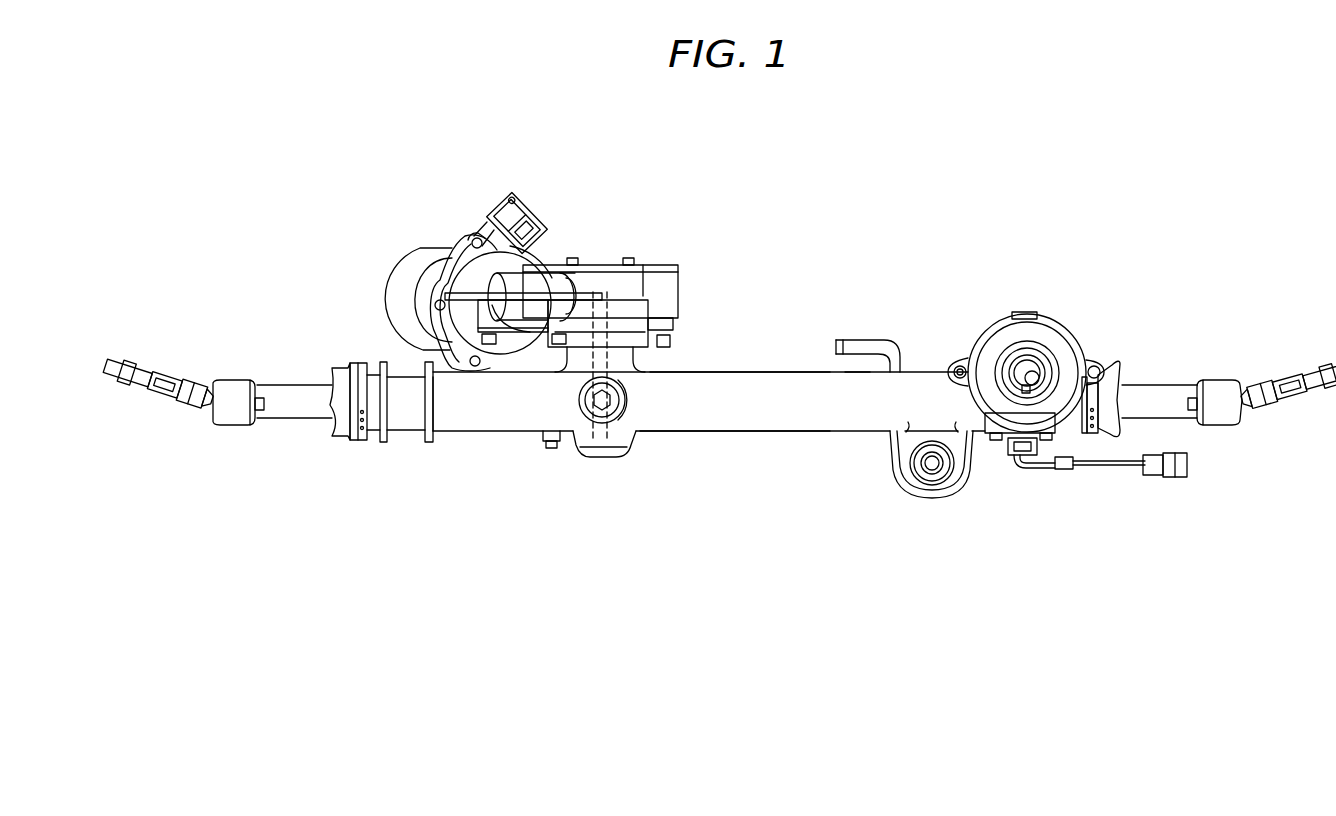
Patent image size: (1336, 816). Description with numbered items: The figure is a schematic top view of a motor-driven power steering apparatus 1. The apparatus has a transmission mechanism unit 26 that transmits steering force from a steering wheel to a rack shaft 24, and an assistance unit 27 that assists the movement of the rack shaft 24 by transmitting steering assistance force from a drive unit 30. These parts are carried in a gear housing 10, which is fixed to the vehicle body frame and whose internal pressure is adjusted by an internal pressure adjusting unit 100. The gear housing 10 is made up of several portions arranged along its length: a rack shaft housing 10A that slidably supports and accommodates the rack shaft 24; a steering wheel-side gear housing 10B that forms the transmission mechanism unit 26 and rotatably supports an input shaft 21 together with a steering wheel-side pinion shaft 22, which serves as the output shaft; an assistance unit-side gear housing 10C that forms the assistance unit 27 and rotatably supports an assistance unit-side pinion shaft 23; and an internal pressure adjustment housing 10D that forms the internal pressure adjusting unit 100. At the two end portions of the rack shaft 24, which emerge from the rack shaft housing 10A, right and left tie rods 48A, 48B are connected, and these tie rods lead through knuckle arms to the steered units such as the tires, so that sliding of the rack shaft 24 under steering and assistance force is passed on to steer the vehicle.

The motor-driven power steering apparatus 1 is at (345, 167).
The gear housing 10 is at (743, 361).
The rack shaft housing 10A is at (733, 432).
The steering wheel-side gear housing 10B is at (1043, 333).
The assistance unit-side gear housing 10C is at (660, 278).
The internal pressure adjustment housing 10D is at (860, 356).
The input shaft 21 is at (1050, 365).
The steering wheel-side pinion shaft 22 is at (1027, 373).
The assistance unit-side pinion shaft 23 is at (602, 452).
The rack shaft 24 is at (289, 392).
The transmission mechanism unit 26 is at (988, 476).
The assistance unit 27 is at (713, 250).
The drive unit 30 is at (426, 240).
The right tie rod 48A is at (182, 395).
The left tie rod 48B is at (1305, 377).
The internal pressure adjusting unit 100 is at (862, 315).